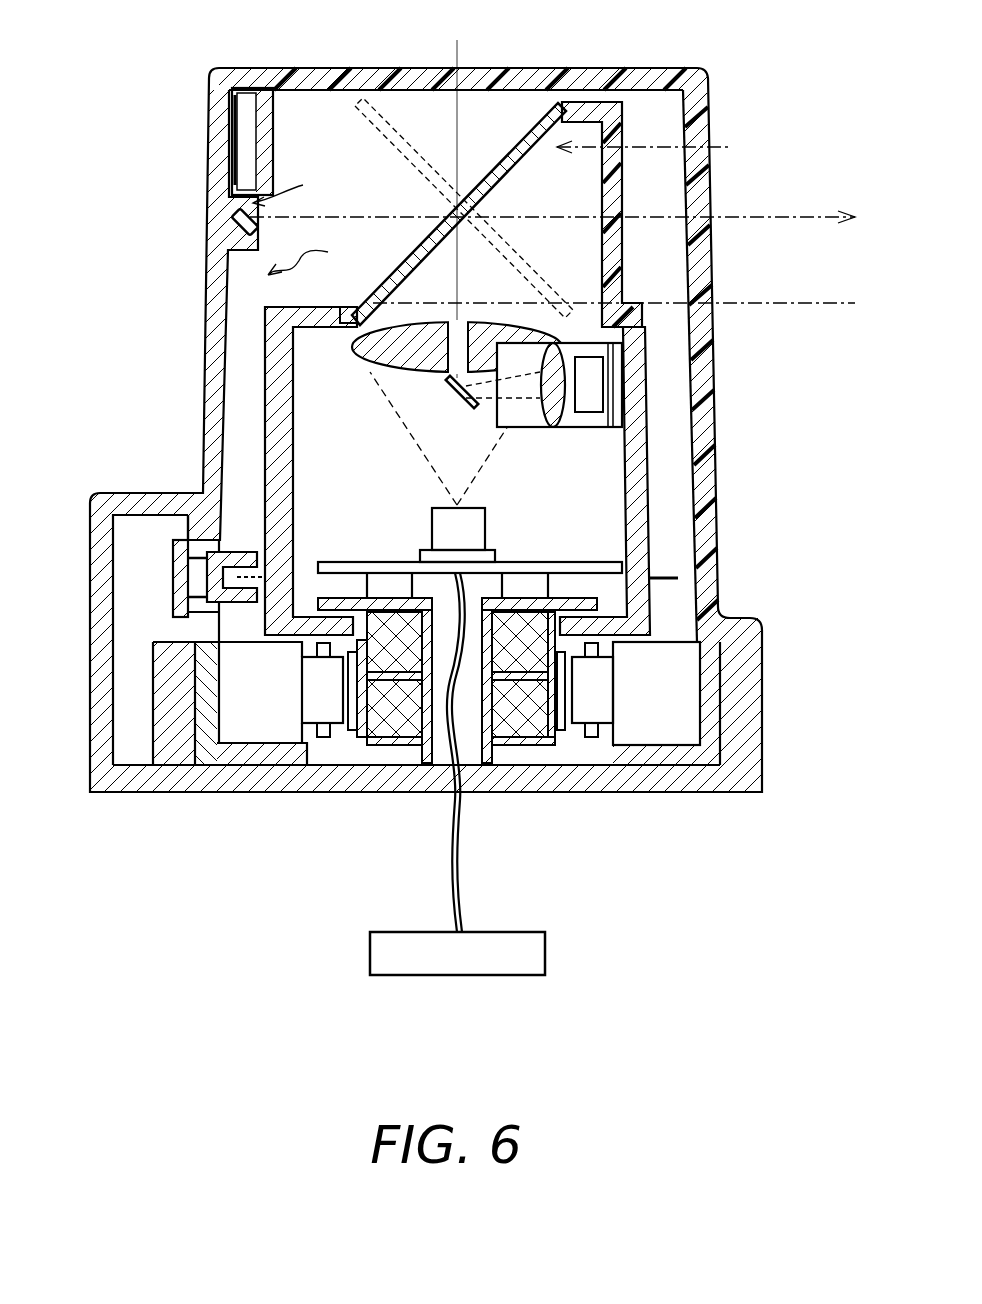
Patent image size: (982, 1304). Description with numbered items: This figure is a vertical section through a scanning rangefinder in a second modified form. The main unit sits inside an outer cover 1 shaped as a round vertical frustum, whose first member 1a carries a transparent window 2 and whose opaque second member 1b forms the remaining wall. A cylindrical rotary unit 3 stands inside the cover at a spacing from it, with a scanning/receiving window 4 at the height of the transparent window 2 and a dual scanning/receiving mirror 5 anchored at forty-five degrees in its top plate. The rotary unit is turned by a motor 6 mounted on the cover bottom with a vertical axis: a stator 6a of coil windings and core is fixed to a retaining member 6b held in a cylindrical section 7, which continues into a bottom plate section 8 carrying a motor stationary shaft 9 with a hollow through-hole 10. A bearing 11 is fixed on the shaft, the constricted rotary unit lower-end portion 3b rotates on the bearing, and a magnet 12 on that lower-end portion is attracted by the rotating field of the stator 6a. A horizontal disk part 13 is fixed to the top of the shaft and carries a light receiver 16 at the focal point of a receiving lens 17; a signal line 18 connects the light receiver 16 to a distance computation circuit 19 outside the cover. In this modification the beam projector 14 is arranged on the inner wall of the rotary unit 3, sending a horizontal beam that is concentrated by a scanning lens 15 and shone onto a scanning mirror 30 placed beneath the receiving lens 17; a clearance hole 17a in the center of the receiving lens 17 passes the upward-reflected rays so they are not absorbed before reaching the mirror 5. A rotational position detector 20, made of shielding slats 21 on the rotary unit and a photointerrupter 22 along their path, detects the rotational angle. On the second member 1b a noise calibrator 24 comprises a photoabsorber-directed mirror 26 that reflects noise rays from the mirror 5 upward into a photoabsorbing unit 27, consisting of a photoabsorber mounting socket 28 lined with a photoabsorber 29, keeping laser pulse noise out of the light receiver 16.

The outer cover 1 is at (443, 430).
The first member 1a is at (713, 403).
The second member 1b is at (205, 383).
The transparent window 2 is at (712, 268).
The cylindrical rotary unit 3 is at (652, 515).
The rotary unit lower-end portion 3b is at (538, 737).
The scanning/receiving window 4 is at (620, 187).
The dual scanning/receiving mirror 5 is at (509, 137).
The motor 6 is at (723, 680).
The stator 6a is at (616, 727).
The retaining member 6b is at (662, 723).
The cylindrical section 7 is at (455, 671).
The bottom plate section 8 is at (306, 755).
The motor stationary shaft 9 is at (473, 713).
The hollow through-hole 10 is at (435, 712).
The bearing 11 is at (390, 727).
The magnet 12 is at (338, 700).
The horizontal disk part 13 is at (343, 561).
The beam projector 14 is at (590, 405).
The scanning lens 15 is at (551, 420).
The light receiver 16 is at (485, 522).
The receiving lens 17 is at (442, 343).
The clearance hole 17a is at (461, 332).
The signal line 18 is at (463, 887).
The distance computation circuit 19 is at (547, 955).
The rotational position detector 20 is at (160, 583).
The shielding slats 21 is at (667, 585).
The photointerrupter 22 is at (236, 552).
The noise calibrator 24 is at (312, 253).
The photoabsorber-directed mirror 26 is at (247, 207).
The photoabsorbing unit 27 is at (295, 187).
The photoabsorber mounting socket 28 is at (252, 165).
The photoabsorber 29 is at (245, 126).
The scanning mirror 30 is at (454, 406).